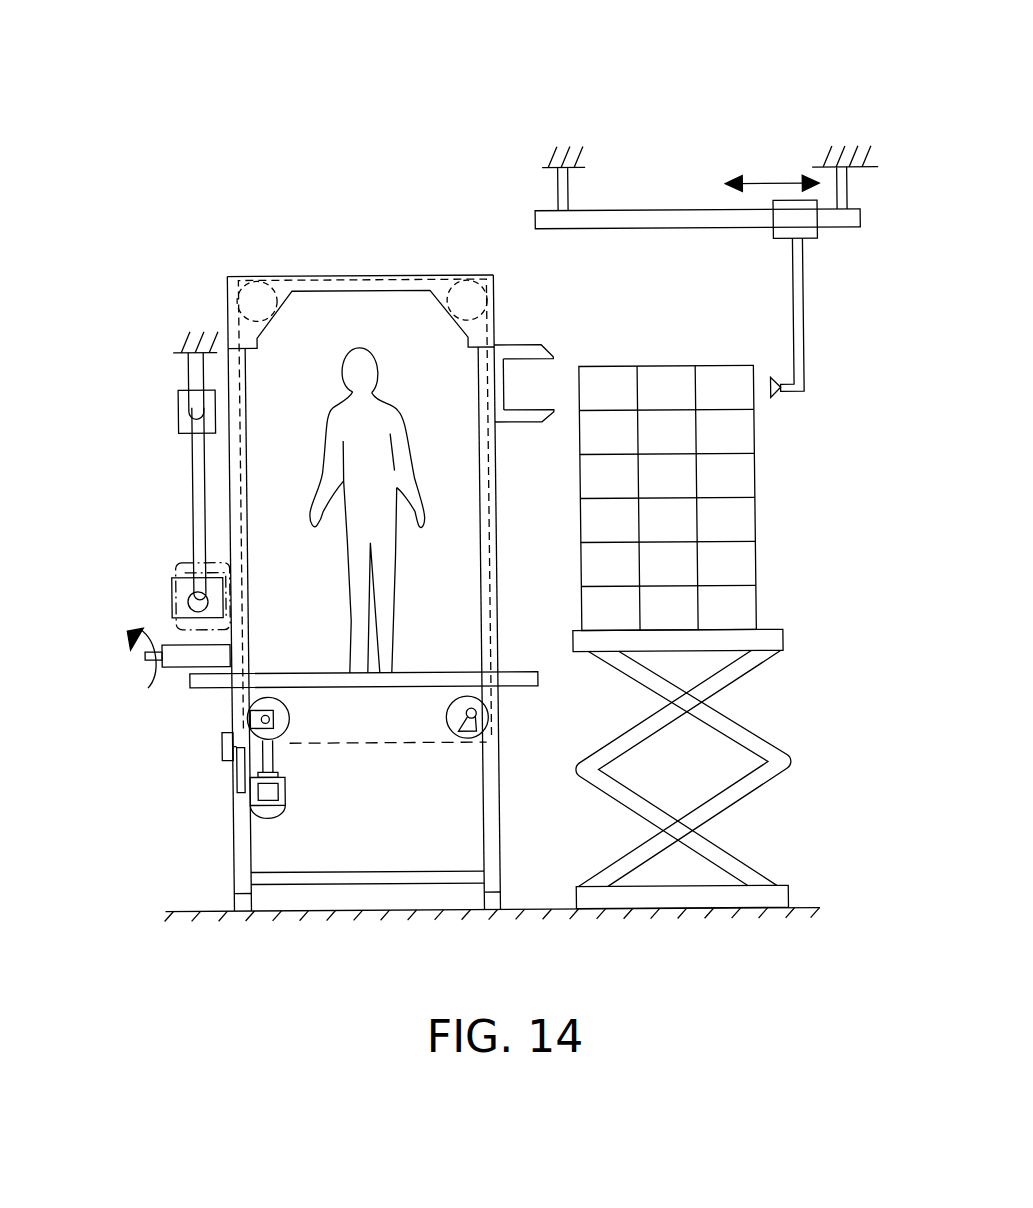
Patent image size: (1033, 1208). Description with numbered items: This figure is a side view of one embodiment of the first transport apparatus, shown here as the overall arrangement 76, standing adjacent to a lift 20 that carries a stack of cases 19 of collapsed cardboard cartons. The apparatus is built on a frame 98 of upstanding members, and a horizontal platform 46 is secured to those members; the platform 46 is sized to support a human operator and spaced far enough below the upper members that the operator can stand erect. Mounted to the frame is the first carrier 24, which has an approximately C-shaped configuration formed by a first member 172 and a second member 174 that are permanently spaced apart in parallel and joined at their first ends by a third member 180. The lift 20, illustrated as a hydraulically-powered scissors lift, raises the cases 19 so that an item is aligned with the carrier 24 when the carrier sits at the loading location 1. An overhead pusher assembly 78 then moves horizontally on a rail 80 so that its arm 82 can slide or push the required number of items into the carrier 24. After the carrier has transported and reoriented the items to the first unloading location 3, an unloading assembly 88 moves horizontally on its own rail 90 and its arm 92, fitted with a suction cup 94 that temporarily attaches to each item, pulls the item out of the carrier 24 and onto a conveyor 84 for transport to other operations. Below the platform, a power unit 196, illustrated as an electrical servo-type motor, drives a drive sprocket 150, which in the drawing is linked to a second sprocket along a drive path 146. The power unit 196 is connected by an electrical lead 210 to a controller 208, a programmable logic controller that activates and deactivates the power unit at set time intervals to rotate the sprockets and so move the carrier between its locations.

The loading location 1 is at (573, 334).
The first unloading location 3 is at (118, 503).
The cases 19 is at (176, 571).
The lift 20 is at (797, 722).
The first carrier 24 is at (549, 321).
The horizontal platform 46 is at (419, 669).
The inspection station 76 is at (453, 80).
The pusher assembly 78 is at (778, 158).
The rail 80 is at (645, 212).
The arm 82 is at (806, 357).
The conveyor 84 is at (177, 666).
The unloading assembly 88 is at (158, 335).
The rail 90 is at (197, 408).
The arm 92 is at (194, 528).
The suction cup 94 is at (172, 601).
The frame 98 is at (286, 236).
The sensing line 146 is at (392, 742).
The drive sprocket 150 is at (289, 716).
The first member 172 is at (516, 345).
The second member 174 is at (519, 424).
The third member 180 is at (501, 388).
The power unit 196 is at (270, 816).
The controller 208 is at (220, 744).
The electrical lead 210 is at (240, 778).